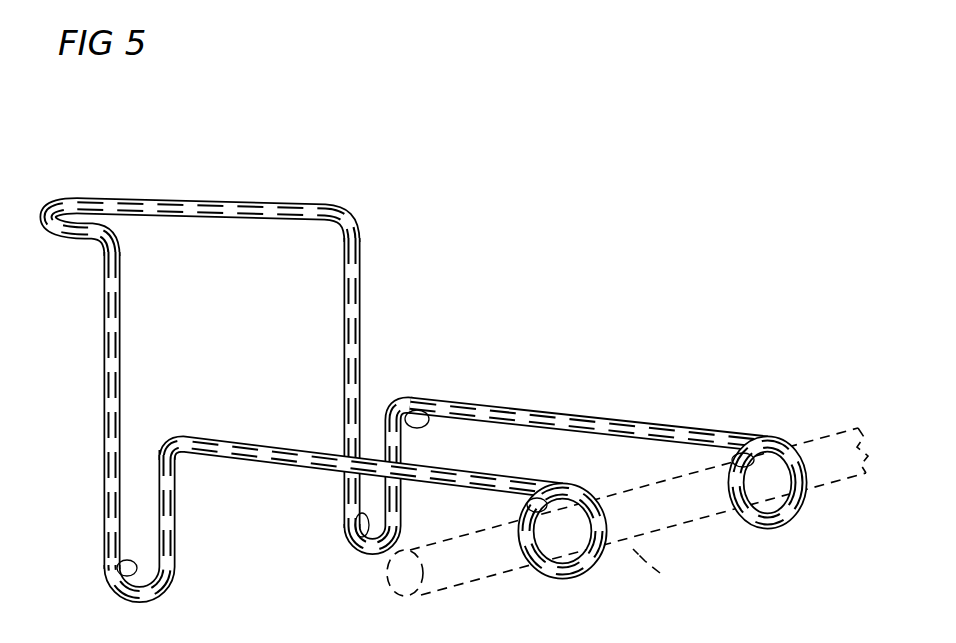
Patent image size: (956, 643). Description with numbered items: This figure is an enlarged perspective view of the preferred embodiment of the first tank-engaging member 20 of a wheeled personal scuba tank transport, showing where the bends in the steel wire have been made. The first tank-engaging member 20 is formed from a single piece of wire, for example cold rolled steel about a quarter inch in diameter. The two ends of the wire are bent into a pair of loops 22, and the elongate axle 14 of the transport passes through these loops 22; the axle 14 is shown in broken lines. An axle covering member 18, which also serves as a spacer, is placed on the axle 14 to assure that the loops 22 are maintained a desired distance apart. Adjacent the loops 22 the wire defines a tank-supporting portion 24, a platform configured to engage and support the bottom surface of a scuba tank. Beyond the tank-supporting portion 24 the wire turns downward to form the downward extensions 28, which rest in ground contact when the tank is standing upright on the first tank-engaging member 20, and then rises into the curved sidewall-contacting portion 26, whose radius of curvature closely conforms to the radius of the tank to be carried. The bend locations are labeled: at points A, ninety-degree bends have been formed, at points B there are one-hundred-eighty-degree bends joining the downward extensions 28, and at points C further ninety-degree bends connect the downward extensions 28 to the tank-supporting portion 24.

The axle 14 is at (627, 534).
The axle covering member 18 is at (663, 571).
The first tank-engaging member 20 is at (267, 368).
The loops 22 is at (585, 573).
The tank-supporting portion 24 is at (578, 415).
The sidewall-contacting portion 26 is at (146, 199).
The downward extensions 28 is at (105, 504).
The points A is at (99, 244).
The points B is at (104, 568).
The points C is at (178, 457).